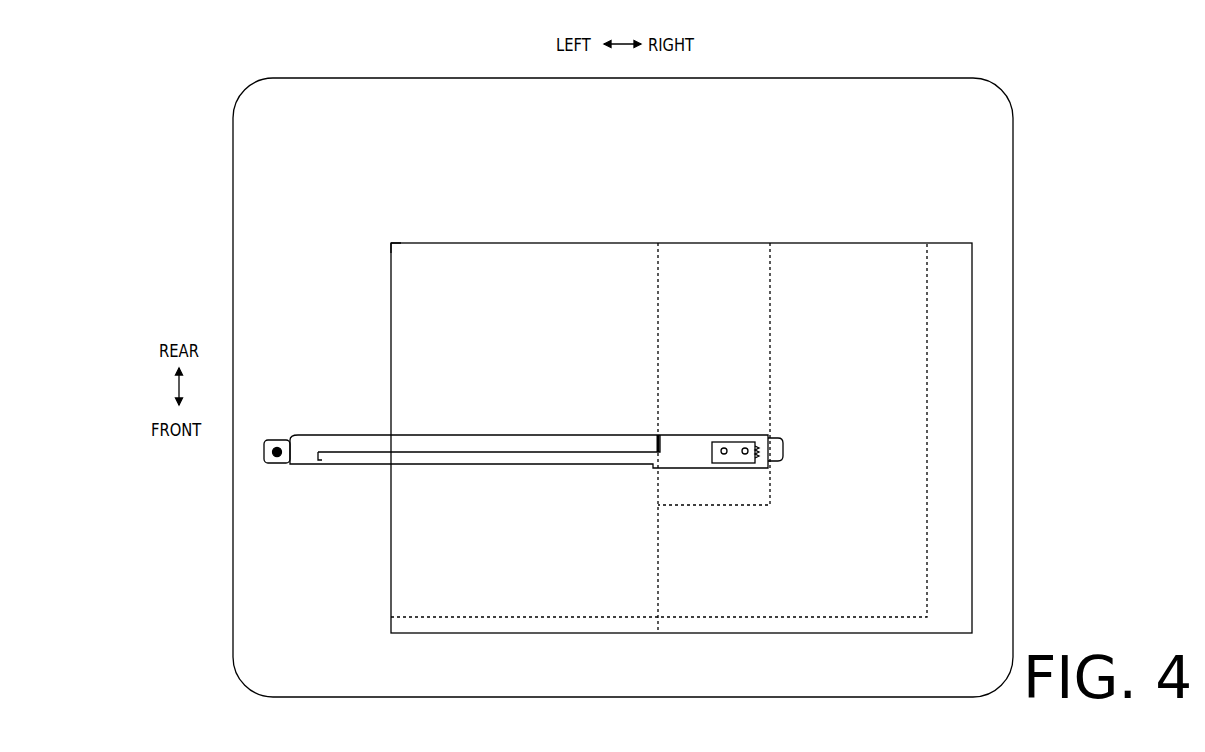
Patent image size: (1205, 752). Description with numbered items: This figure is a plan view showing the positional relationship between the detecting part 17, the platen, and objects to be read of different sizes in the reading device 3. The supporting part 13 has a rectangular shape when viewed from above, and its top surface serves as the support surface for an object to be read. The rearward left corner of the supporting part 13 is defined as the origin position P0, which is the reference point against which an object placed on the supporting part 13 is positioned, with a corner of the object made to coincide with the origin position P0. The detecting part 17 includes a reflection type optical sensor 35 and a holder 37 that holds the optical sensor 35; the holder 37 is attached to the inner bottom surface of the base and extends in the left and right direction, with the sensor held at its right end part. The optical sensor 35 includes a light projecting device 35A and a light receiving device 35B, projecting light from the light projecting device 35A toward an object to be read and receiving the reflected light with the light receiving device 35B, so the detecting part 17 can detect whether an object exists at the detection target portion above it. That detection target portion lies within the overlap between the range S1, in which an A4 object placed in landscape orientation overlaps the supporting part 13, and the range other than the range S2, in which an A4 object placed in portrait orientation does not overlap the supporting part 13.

The housing 3 is at (960, 83).
The supporting part 13 is at (430, 625).
The origin position P0 is at (391, 240).
The range S1 is at (772, 280).
The range S2 is at (660, 568).
The detecting part 17 is at (560, 432).
The holder 37 is at (488, 450).
The optical sensor 35 is at (720, 463).
The light projecting device 35A is at (722, 447).
The light receiving device 35B is at (745, 447).